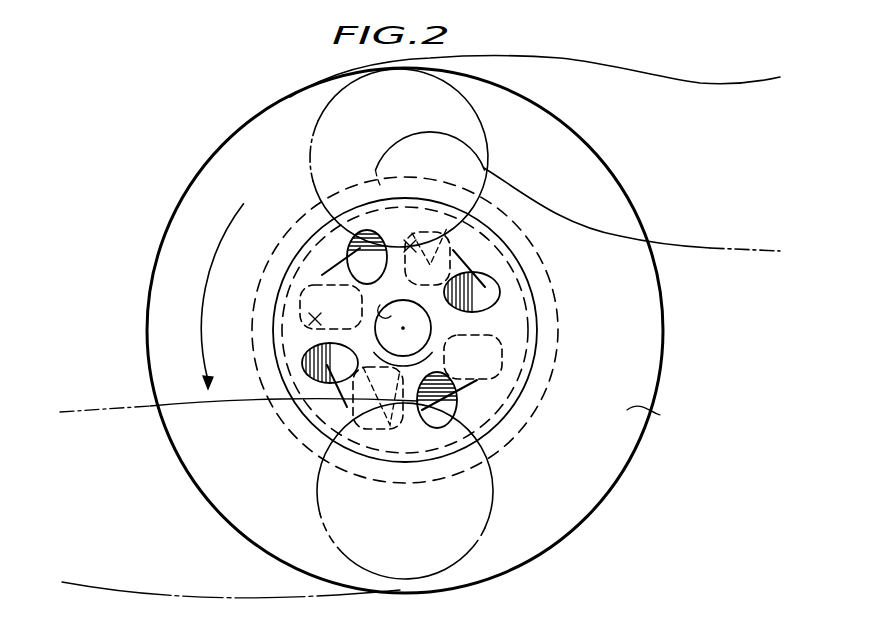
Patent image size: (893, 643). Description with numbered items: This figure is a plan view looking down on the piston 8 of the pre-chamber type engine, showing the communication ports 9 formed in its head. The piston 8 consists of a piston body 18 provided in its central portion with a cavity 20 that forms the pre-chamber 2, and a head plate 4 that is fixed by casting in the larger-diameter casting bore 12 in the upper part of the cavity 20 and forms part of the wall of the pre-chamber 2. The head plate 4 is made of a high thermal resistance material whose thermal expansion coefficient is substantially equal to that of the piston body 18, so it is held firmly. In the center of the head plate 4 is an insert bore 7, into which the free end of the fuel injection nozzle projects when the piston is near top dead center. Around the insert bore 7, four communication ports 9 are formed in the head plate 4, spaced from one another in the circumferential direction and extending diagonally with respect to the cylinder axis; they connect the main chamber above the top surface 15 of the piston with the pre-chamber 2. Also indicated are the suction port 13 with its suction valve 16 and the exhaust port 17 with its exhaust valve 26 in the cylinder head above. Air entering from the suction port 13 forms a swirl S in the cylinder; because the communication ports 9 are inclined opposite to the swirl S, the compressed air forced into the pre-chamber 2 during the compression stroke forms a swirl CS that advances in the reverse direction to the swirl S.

The pre-chamber 2 is at (293, 380).
The head plate 4 is at (477, 380).
The insert bore 7 is at (378, 313).
The piston 8 is at (202, 152).
The communication ports 9 is at (369, 250).
The casting bore 12 is at (559, 345).
The suction port 13 is at (682, 170).
The top surface of the piston 15 is at (640, 297).
The suction valve 16 is at (337, 110).
The exhaust port 17 is at (164, 530).
The piston body 18 is at (660, 415).
The cavity 20 is at (322, 229).
The exhaust valve 26 is at (495, 498).
The swirl current in the pre-chamber CS is at (500, 253).
The swirl current S is at (206, 268).